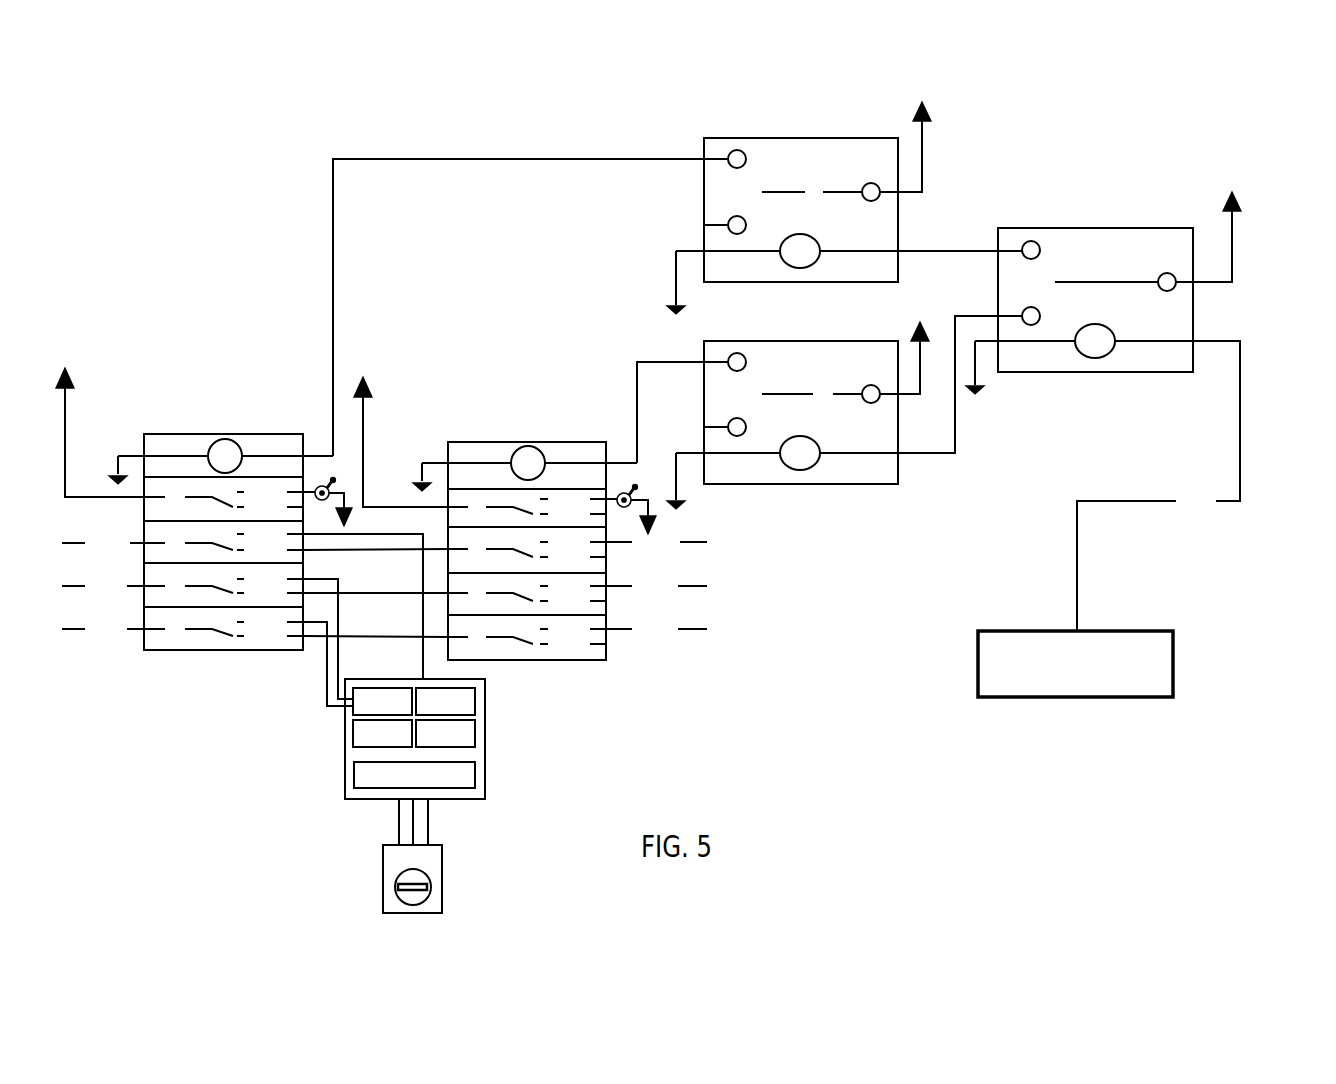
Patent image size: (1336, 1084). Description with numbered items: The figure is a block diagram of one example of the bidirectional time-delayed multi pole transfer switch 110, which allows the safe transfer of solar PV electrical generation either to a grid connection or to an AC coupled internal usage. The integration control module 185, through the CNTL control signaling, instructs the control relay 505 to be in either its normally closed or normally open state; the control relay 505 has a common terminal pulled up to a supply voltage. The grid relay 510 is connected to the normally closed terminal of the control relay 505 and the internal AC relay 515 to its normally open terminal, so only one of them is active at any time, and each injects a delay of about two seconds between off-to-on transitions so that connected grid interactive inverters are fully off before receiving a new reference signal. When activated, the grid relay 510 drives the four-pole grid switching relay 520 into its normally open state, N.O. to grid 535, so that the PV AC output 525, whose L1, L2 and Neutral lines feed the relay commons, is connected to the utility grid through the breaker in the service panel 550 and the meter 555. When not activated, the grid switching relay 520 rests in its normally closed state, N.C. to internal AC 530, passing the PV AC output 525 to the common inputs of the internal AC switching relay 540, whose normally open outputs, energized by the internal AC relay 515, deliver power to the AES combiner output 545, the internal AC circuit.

The bidirectional time-delayed multi pole transfer switch 110 is at (1274, 163).
The integration control module 185 is at (1173, 679).
The control relay 505 is at (1048, 372).
The grid relay 510 is at (718, 282).
The internal AC relay 515 is at (735, 484).
The grid switching relay 520 is at (176, 434).
The PV AC output 525 is at (80, 660).
The N.C. to internal AC 530 is at (300, 667).
The N.O. to grid 535 is at (315, 704).
The internal AC switching relay 540 is at (467, 442).
The AES combiner output 545 is at (670, 660).
The service panel 550 is at (485, 743).
The meter 555 is at (442, 867).